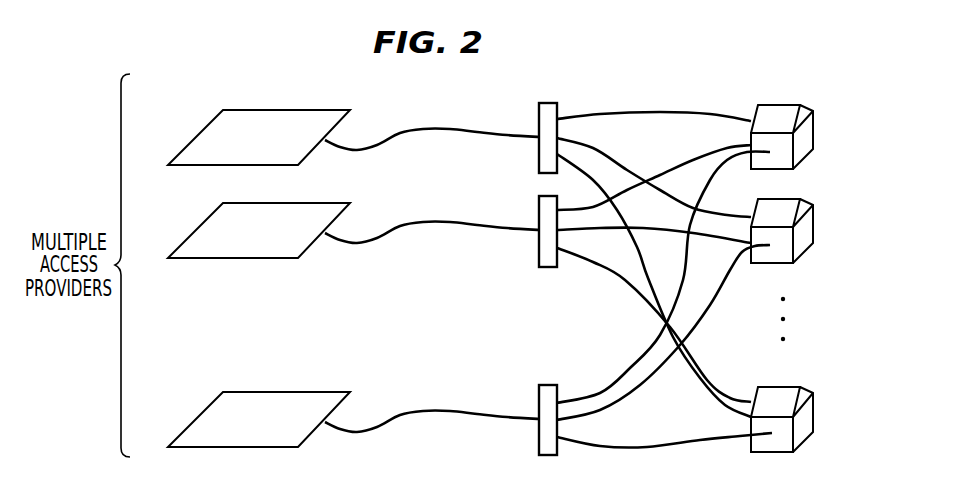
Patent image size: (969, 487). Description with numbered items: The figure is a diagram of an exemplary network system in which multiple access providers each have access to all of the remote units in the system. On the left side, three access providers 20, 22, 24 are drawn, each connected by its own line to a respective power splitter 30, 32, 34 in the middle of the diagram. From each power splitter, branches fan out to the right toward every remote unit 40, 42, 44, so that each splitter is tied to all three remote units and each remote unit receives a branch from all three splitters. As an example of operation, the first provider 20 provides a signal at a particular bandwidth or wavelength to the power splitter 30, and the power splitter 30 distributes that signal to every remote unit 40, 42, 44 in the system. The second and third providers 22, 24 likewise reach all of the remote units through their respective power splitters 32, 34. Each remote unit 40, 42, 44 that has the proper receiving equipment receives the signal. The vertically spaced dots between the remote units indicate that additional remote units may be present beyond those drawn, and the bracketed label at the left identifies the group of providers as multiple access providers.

The access provider 20 is at (197, 135).
The access provider 22 is at (197, 228).
The access provider 24 is at (197, 418).
The power splitter 30 is at (539, 117).
The power splitter 32 is at (539, 210).
The power splitter 34 is at (539, 399).
The remote unit 40 is at (803, 143).
The remote unit 42 is at (803, 237).
The remote unit 44 is at (803, 426).